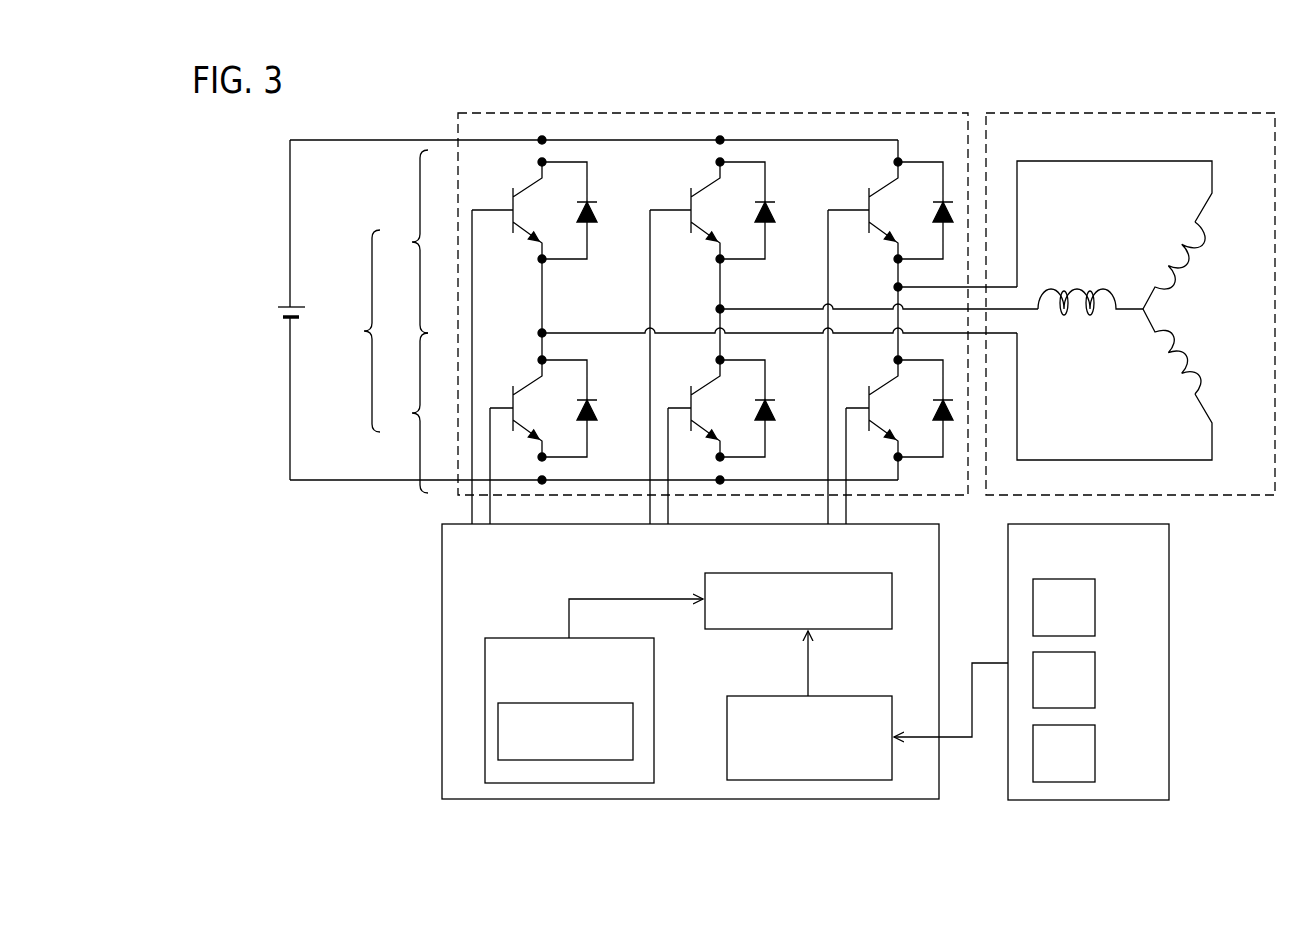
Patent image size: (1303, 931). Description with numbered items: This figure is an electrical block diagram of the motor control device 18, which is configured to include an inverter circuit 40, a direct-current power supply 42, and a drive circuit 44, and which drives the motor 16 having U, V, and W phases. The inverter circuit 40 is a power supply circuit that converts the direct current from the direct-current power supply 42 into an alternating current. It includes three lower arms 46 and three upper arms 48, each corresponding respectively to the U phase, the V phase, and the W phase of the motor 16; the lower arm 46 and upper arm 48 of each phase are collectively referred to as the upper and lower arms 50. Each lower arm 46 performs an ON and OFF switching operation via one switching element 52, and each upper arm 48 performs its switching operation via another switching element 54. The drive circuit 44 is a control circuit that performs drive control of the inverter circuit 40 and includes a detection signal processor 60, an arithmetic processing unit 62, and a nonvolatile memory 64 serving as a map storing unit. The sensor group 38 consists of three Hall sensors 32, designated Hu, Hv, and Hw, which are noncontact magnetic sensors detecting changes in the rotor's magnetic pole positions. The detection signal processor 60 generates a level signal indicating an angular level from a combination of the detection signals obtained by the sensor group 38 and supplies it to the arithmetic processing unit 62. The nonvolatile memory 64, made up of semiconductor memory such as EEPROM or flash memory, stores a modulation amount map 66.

The motor control device 18 is at (548, 305).
The direct-current power supply 42 is at (263, 320).
The inverter circuit 40 is at (811, 112).
The switching element 54 is at (510, 208).
The switching element 52 is at (510, 406).
The upper arm 48 is at (405, 241).
The lower arm 46 is at (405, 413).
The upper and lower arms 50 is at (357, 331).
The motor 16 is at (1140, 112).
The drive circuit 44 is at (442, 562).
The arithmetic processing unit 62 is at (824, 573).
The nonvolatile memory 64 is at (527, 638).
The modulation amount map 66 is at (635, 722).
The detection signal processor 60 is at (848, 696).
The sensor group 38 is at (1169, 555).
The Hall sensor 32 is at (1095, 608).